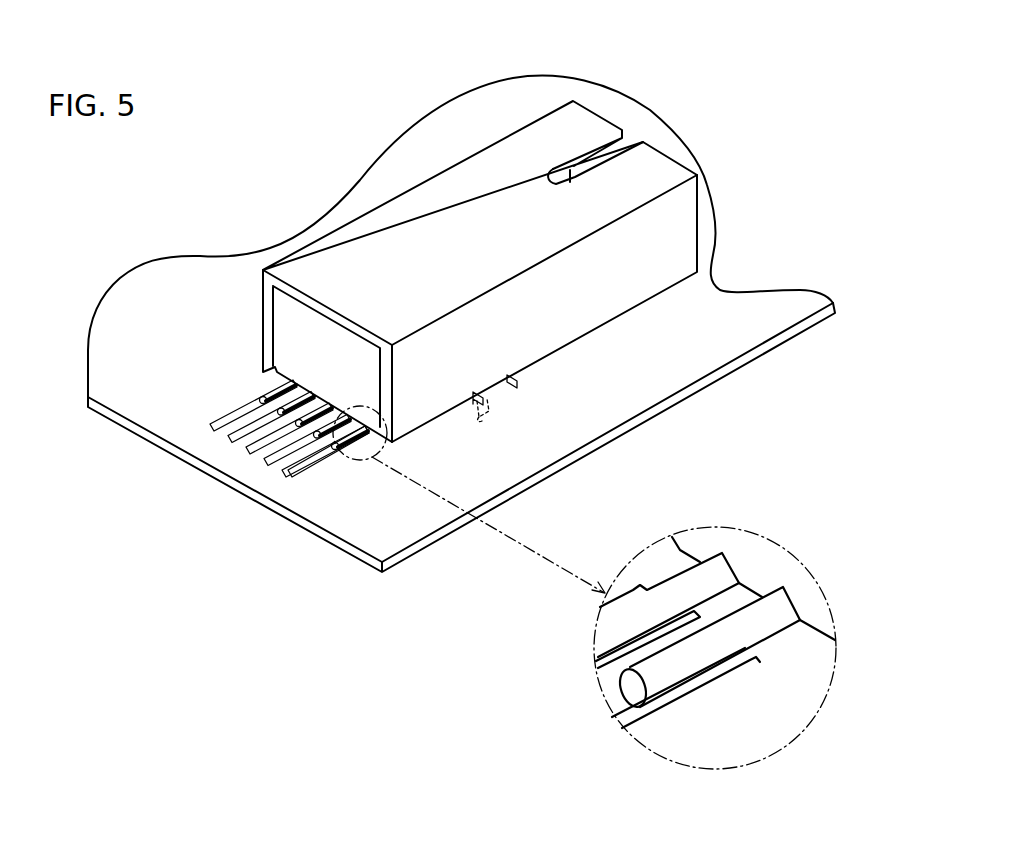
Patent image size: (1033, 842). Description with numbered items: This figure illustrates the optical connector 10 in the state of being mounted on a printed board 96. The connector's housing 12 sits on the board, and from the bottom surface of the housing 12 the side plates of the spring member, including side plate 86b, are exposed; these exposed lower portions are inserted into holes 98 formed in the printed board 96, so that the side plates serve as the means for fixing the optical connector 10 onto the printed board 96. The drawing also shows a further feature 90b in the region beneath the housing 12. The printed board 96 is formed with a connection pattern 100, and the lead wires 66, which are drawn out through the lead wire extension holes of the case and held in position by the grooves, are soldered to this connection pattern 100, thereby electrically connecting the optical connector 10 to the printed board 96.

The optical connector 10 is at (480, 267).
The housing 12 is at (362, 252).
The lead wires 66 is at (348, 443).
The side plate 86b is at (497, 393).
The hidden mounting post 90b is at (487, 403).
The printed board 96 is at (772, 300).
The hole 98 is at (508, 378).
The connection pattern 100 is at (332, 446).